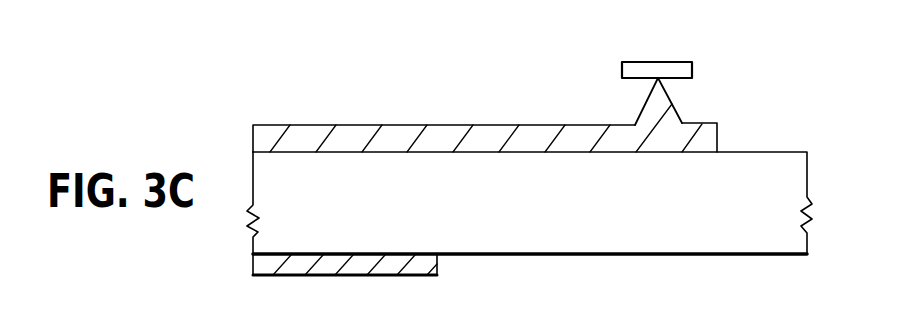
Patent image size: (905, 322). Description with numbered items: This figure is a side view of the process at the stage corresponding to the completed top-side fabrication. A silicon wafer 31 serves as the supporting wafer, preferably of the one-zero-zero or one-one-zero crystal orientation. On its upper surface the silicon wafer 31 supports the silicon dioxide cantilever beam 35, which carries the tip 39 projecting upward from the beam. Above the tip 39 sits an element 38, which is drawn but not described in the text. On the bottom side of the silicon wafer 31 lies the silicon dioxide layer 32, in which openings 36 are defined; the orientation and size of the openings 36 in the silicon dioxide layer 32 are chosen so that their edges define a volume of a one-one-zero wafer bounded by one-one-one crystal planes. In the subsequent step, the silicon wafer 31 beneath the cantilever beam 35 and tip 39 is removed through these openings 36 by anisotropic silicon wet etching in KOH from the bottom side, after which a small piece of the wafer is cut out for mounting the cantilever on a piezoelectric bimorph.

The silicon wafer 31 is at (797, 190).
The silicon dioxide layer 32 is at (413, 273).
The cantilever beam 35 is at (718, 142).
The openings 36 is at (548, 255).
The contact pad 38 is at (675, 68).
The tip 39 is at (669, 103).